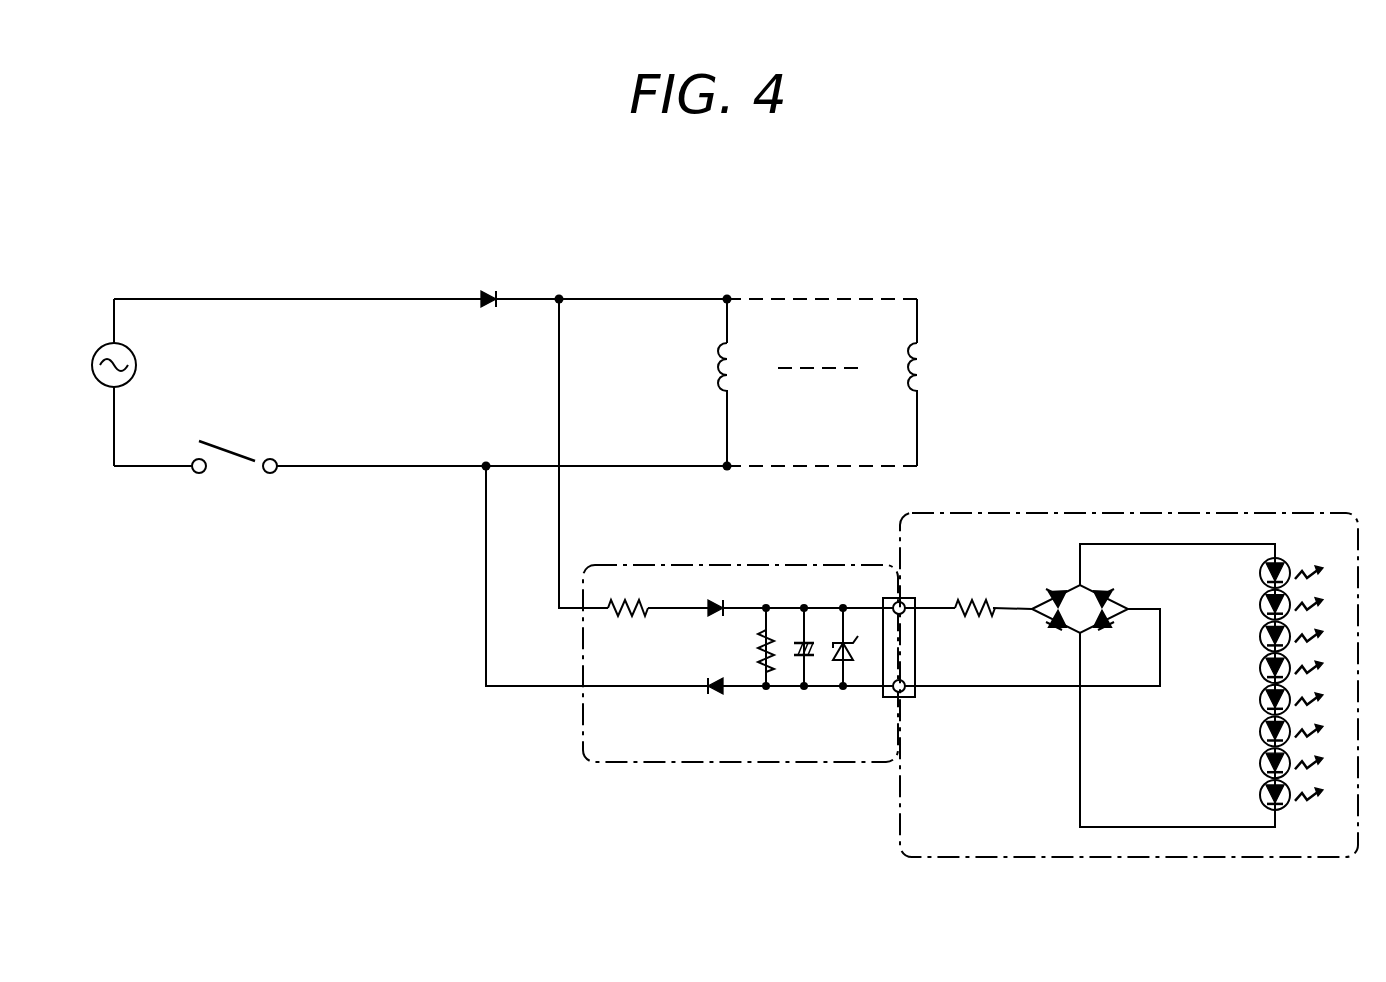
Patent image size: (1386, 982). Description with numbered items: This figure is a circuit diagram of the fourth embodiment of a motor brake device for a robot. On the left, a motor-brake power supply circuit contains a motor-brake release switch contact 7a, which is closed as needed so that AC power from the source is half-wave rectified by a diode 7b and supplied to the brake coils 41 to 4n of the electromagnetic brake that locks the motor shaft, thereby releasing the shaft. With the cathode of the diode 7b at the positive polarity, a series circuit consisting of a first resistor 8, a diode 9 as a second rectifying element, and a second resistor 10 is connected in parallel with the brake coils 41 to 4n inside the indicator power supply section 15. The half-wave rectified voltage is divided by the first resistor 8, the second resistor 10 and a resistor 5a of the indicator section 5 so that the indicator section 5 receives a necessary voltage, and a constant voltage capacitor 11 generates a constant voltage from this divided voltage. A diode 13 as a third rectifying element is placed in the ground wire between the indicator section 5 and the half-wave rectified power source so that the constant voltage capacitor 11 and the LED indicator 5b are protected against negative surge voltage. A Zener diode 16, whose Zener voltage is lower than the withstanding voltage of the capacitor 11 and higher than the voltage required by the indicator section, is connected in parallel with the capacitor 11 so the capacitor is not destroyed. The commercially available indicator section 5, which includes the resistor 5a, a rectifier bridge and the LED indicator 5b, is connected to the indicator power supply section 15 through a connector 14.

The motor-brake release switch contact 7a is at (243, 452).
The diode 7b is at (487, 305).
The brake coil 41 is at (729, 325).
The brake coil 4n is at (797, 262).
The first resistor 8 is at (623, 600).
The diode 9 is at (715, 600).
The second resistor 10 is at (755, 645).
The constant voltage capacitor 11 is at (796, 658).
The diode 13 is at (716, 695).
The connector 14 is at (916, 672).
The indicator power supply section 15 is at (640, 764).
The Zener diode 16 is at (838, 662).
The indicator section 5 is at (1188, 512).
The resistor 5a is at (972, 600).
The LED indicator 5b is at (1290, 560).